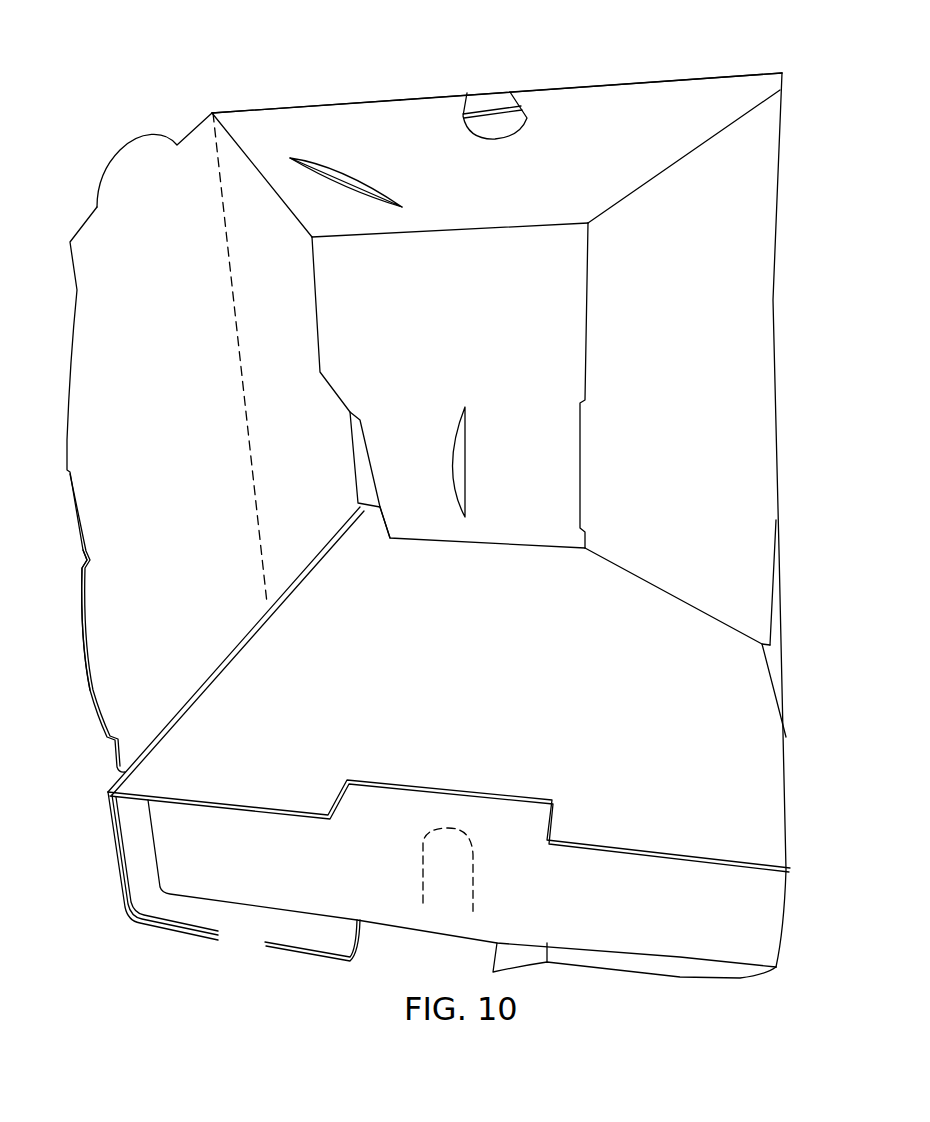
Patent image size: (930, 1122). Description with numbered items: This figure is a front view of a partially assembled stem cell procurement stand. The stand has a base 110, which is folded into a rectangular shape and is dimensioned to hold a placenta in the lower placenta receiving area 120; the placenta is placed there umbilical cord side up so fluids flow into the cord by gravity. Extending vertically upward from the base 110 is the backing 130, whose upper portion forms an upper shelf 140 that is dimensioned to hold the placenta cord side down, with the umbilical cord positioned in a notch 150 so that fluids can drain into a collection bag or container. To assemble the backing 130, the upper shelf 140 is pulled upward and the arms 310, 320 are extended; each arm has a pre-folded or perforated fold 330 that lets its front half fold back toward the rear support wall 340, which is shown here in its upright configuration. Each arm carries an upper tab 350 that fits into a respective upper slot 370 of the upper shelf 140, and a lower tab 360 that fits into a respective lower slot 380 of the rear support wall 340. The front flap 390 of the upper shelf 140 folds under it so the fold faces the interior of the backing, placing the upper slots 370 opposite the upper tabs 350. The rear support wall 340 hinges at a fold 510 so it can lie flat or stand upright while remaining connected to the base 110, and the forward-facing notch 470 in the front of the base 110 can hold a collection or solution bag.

The base 110 is at (212, 883).
The lower placenta receiving area 120 is at (477, 630).
The backing 130 is at (259, 108).
The upper shelf 140 is at (358, 102).
The notch 150 is at (485, 103).
The arm 310 is at (773, 283).
The arm 320 is at (97, 333).
The fold 330 is at (224, 244).
The rear support wall 340 is at (474, 308).
The upper tab 350 is at (132, 160).
The lower tab 360 is at (100, 678).
The upper slot 370 is at (328, 172).
The lower slot 380 is at (578, 422).
The front flap 390 is at (508, 188).
The notch 470 is at (420, 868).
The fold 510 is at (420, 545).